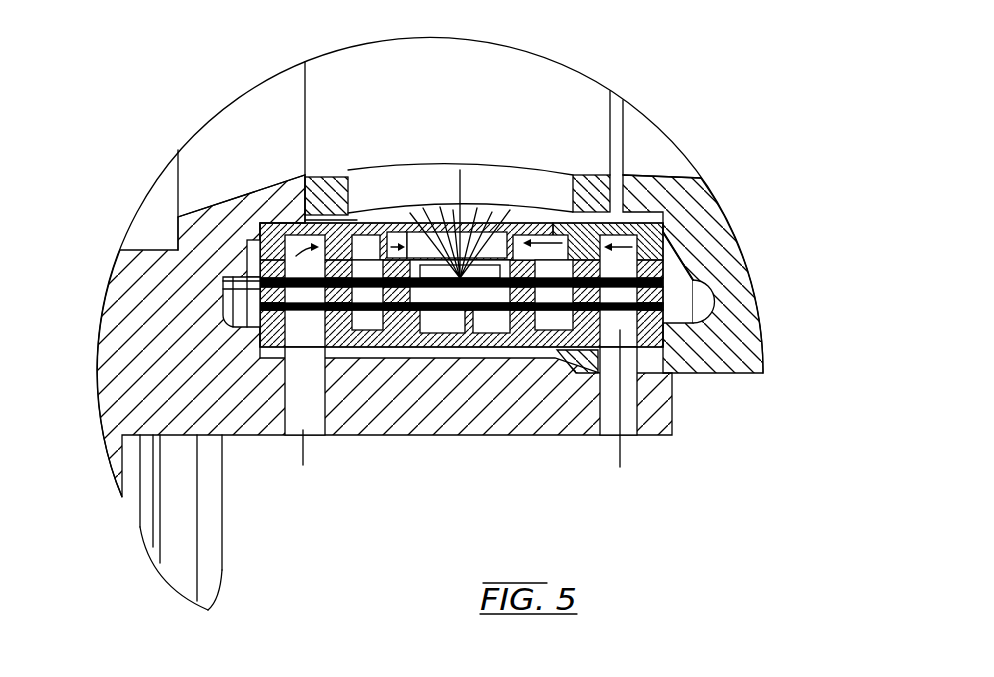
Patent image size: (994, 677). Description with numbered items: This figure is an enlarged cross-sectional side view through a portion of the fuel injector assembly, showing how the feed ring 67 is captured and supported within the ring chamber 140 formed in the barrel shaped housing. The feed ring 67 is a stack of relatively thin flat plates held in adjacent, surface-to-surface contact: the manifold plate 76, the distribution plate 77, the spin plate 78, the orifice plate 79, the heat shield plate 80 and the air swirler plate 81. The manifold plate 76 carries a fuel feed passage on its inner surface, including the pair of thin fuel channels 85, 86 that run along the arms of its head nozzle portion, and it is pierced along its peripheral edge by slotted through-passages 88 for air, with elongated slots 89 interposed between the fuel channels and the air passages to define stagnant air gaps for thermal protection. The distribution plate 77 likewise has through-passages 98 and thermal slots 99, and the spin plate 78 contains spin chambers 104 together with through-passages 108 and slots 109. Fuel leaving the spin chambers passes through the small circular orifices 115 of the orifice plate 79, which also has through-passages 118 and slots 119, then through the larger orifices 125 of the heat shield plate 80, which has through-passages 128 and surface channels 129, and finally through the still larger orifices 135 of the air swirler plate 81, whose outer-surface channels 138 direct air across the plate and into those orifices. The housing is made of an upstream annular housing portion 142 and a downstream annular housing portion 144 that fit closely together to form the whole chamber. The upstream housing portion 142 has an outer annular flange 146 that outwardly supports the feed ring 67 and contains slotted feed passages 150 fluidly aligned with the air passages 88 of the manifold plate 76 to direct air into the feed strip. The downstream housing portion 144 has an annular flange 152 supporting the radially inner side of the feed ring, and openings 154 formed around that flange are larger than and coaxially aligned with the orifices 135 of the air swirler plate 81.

The feed ring 67 is at (670, 240).
The manifold plate 76 is at (665, 343).
The distribution plate 77 is at (665, 306).
The spin plate 78 is at (665, 296).
The orifice plate 79 is at (665, 279).
The heat shield plate 80 is at (665, 268).
The air swirler plate 81 is at (663, 238).
The fuel channel 85 is at (423, 333).
The fuel channel 86 is at (480, 333).
The slotted through-passage 88 is at (298, 393).
The elongated slot 89 is at (363, 397).
The slotted through-passage 98 is at (292, 373).
The elongated slot 99 is at (368, 330).
The spin chamber 104 is at (507, 212).
The slotted through-passage 108 is at (250, 290).
The elongated slot 109 is at (360, 430).
The circular orifice 115 is at (453, 210).
The slotted through-passage 118 is at (245, 247).
The elongated slot 119 is at (372, 258).
The circular orifice 125 is at (440, 207).
The slotted through-passage 128 is at (287, 217).
The elongated channel 129 is at (355, 213).
The circular orifice 135 is at (423, 208).
The slotted channel 138 is at (295, 222).
The ring chamber 140 is at (665, 332).
The upstream annular housing portion 142 is at (230, 418).
The downstream annular housing portion 144 is at (655, 430).
The outer annular flange 146 is at (553, 330).
The slotted feed passage 150 is at (313, 430).
The annular flange 152 is at (600, 177).
The opening 154 is at (500, 178).